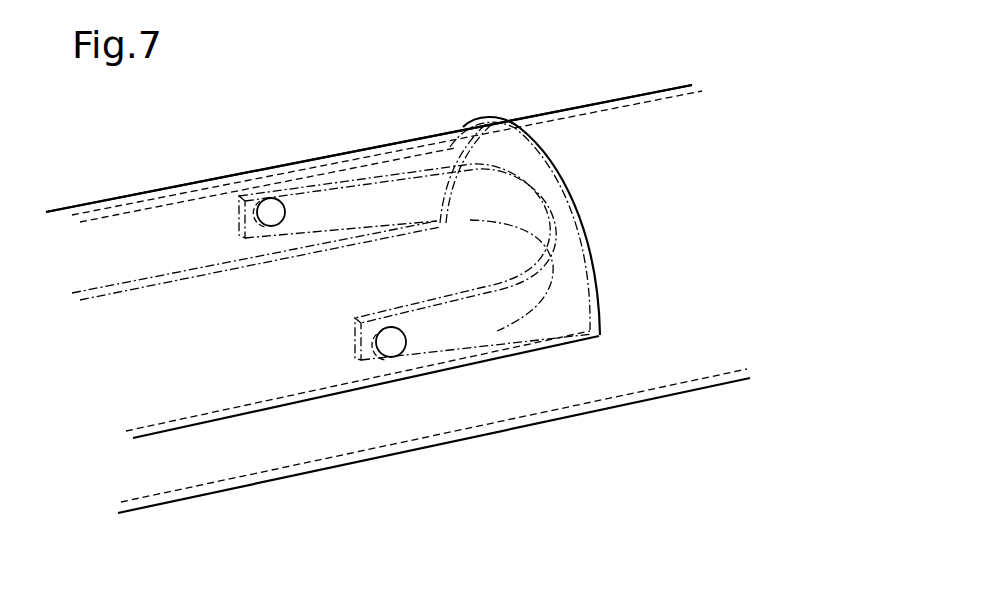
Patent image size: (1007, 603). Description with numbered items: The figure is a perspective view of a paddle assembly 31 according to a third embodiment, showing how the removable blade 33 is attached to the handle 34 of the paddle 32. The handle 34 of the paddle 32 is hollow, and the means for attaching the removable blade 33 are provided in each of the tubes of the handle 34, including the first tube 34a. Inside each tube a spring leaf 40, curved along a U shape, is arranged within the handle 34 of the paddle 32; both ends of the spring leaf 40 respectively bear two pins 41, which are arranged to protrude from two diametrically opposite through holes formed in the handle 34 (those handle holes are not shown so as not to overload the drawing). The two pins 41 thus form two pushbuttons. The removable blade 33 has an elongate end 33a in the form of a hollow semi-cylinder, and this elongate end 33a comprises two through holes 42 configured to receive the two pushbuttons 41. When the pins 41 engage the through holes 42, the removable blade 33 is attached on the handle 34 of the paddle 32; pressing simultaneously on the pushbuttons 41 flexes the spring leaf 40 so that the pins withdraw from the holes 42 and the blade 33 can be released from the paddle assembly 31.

The paddle assembly 31 is at (647, 495).
The paddle 32 is at (464, 422).
The removable blade 33 is at (369, 174).
The elongate end 33a is at (440, 133).
The handle 34 is at (605, 95).
The first tube 34a is at (647, 360).
The spring leaf 40 is at (463, 320).
The pins 41 is at (265, 202).
The through holes 42 is at (257, 213).